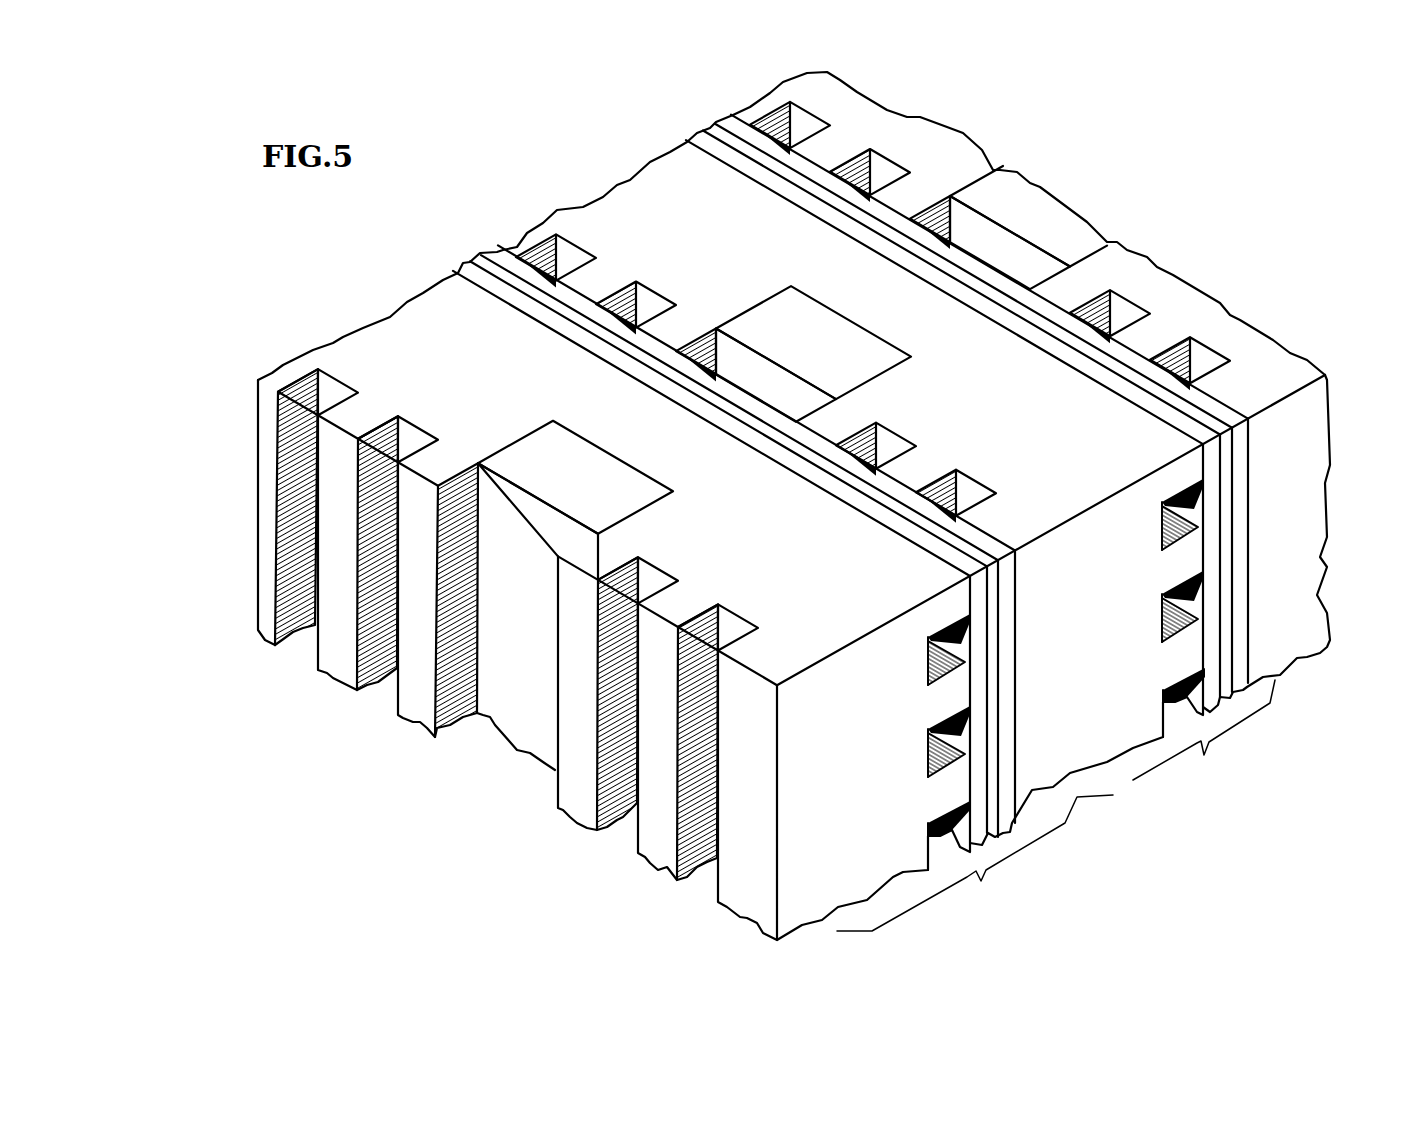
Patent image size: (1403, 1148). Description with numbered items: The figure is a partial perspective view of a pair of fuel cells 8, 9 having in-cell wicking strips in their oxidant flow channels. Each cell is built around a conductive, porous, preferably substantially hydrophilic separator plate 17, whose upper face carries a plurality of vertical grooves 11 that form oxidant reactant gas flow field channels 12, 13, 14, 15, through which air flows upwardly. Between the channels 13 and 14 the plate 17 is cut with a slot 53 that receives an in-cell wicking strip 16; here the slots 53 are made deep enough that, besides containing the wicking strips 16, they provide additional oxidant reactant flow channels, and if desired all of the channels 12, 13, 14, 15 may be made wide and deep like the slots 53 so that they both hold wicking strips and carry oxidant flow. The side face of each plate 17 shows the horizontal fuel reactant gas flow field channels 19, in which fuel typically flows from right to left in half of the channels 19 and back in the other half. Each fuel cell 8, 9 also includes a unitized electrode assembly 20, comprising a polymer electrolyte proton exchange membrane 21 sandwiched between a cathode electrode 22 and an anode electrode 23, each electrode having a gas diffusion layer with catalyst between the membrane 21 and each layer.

The fuel cell 8 is at (975, 863).
The fuel cell 9 is at (1204, 730).
The vertical grooves 11 is at (302, 375).
The oxidant reactant gas flow field channel 12 is at (732, 630).
The oxidant reactant gas flow field channel 13 is at (652, 582).
The oxidant reactant gas flow field channel 14 is at (413, 438).
The oxidant reactant gas flow field channel 15 is at (333, 388).
The in-cell wicking strip 16 is at (607, 482).
The separator plate 17 is at (902, 338).
The fuel reactant gas flow field channels 19 is at (1198, 508).
The unitized electrode assembly 20 is at (846, 337).
The proton exchange membrane 21 is at (898, 508).
The cathode electrode 22 is at (962, 563).
The anode electrode 23 is at (985, 543).
The slots 53 is at (563, 547).